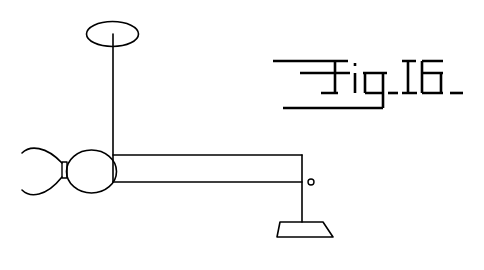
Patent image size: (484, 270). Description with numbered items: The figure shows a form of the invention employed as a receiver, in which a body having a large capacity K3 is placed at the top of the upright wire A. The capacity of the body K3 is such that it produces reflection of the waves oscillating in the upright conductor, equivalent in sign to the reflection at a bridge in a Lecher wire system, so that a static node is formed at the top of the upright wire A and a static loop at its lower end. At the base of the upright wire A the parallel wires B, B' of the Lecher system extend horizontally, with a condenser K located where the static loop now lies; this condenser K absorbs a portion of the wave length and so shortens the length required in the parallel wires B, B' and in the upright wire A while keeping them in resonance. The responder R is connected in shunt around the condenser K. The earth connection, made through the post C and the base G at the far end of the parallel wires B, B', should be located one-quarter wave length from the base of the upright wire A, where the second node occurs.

The body having a large capacity K3 is at (138, 32).
The upright wire A is at (115, 92).
The responder R is at (44, 171).
The condenser K is at (107, 169).
The parallel wire B is at (207, 141).
The parallel wire B' is at (207, 197).
The pivot post C is at (302, 165).
The base G is at (305, 245).